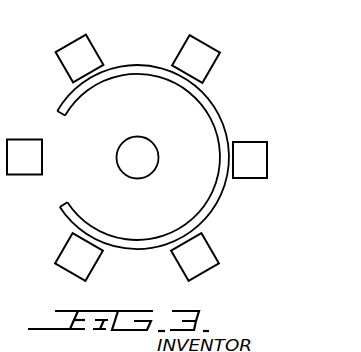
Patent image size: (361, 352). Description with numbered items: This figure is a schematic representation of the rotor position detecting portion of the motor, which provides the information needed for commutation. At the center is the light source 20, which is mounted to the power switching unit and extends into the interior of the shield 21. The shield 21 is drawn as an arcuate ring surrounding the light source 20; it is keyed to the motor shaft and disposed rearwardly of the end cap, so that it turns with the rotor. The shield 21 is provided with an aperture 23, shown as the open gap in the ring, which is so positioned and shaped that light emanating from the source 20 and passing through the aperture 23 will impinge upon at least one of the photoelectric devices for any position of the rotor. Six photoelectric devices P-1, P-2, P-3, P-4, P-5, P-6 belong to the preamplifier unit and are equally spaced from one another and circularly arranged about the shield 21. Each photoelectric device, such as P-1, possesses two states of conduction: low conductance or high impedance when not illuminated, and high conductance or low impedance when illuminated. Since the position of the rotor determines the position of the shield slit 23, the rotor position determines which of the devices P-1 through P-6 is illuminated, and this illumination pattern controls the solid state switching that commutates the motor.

The light source 20 is at (150, 143).
The shield 21 is at (150, 55).
The aperture 23 is at (59, 184).
The photoelectric device P-1 is at (31, 128).
The photoelectric device P-2 is at (78, 41).
The photoelectric device P-3 is at (208, 45).
The photoelectric device P-4 is at (254, 141).
The photoelectric device P-5 is at (204, 272).
The photoelectric device P-6 is at (92, 266).